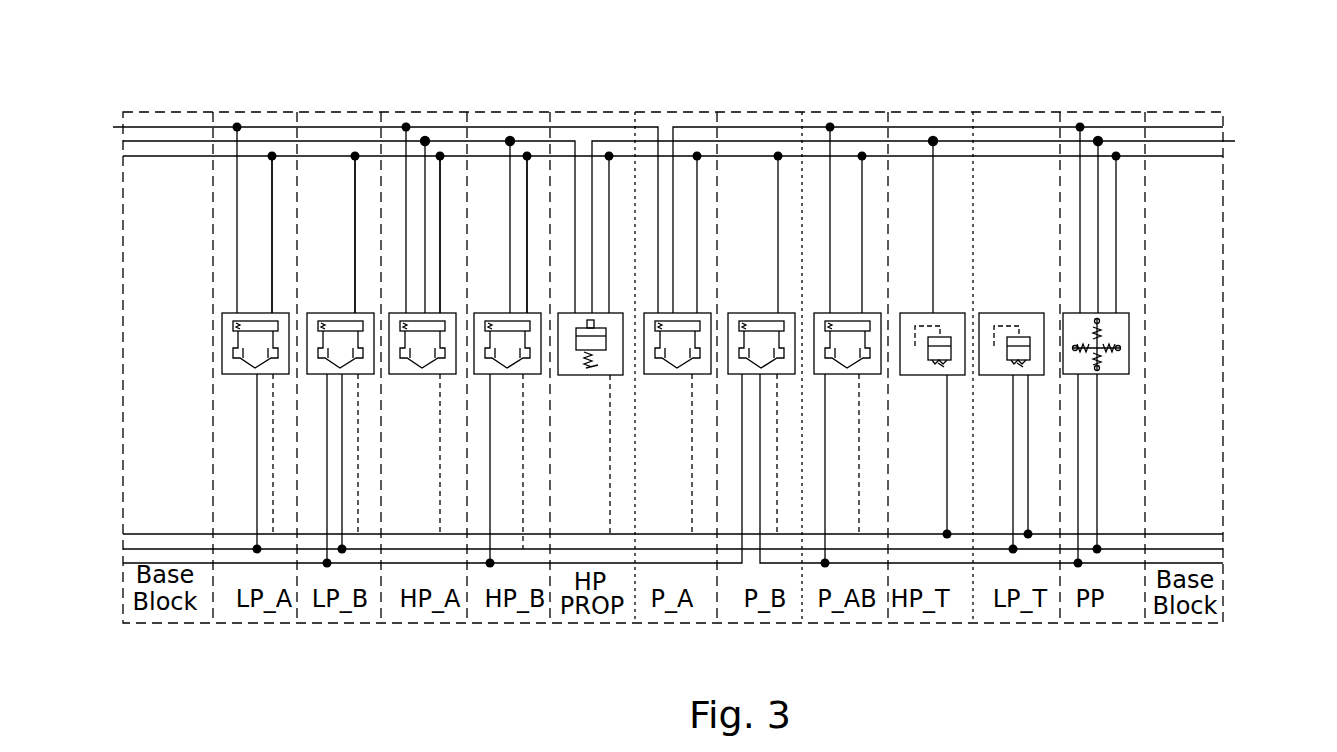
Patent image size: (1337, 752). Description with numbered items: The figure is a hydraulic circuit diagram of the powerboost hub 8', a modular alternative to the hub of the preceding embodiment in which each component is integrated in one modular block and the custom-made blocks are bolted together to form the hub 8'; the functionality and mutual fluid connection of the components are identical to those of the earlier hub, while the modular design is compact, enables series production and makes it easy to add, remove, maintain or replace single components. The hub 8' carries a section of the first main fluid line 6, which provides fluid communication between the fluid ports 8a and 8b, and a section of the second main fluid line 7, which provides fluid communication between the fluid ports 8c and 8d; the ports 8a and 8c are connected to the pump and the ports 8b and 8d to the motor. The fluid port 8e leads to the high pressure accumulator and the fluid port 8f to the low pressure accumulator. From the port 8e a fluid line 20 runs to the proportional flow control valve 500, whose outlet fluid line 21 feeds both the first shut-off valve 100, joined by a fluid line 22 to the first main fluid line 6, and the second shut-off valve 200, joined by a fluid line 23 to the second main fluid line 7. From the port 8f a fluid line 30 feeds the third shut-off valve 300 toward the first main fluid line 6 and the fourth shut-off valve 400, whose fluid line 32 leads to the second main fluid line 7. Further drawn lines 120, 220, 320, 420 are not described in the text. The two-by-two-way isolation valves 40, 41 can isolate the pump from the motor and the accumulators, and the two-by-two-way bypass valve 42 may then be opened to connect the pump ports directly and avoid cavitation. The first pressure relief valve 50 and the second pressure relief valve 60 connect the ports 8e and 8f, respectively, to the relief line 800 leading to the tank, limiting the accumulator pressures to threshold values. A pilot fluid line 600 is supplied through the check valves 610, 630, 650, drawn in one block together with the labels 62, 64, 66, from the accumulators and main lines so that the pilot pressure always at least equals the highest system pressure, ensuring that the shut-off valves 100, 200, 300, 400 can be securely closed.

The first main fluid line 6 is at (168, 127).
The second main fluid line 7 is at (233, 565).
The powerboost hub 8' is at (673, 312).
The fluid port 8a is at (113, 127).
The fluid port 8b is at (1223, 127).
The fluid port 8c is at (1223, 563).
The fluid port 8d is at (123, 563).
The fluid port 8e is at (1235, 141).
The fluid port 8f is at (123, 534).
The fluid line 20 is at (731, 141).
The fluid line 21 is at (327, 141).
The fluid line 22 is at (405, 222).
The fluid line 23 is at (492, 478).
The fluid line 30 is at (257, 458).
The fluid line 32 is at (327, 400).
The isolation valve 40 is at (749, 290).
The isolation valve 41 is at (677, 390).
The bypass valve 42 is at (851, 400).
The first pressure relief valve 50 is at (924, 400).
The second pressure relief valve 60 is at (1000, 400).
The first shut-off valve 100 is at (421, 390).
The connecting line 120 is at (443, 175).
The second shut-off valve 200 is at (497, 290).
The connecting line 220 is at (527, 230).
The third shut-off valve 300 is at (247, 390).
The connecting line 320 is at (272, 196).
The fourth shut-off valve 400 is at (332, 290).
The connecting line 420 is at (355, 207).
The proportional flow control valve 500 is at (592, 390).
The pilot fluid line 600 is at (145, 156).
The check valve 610 is at (1200, 424).
The sensor port 62 is at (1200, 424).
The check valve 630 is at (1200, 424).
The sensor port 64 is at (1200, 424).
The check valve 650 is at (1200, 424).
The sensor port 66 is at (1142, 352).
The relief line 800 is at (1200, 534).